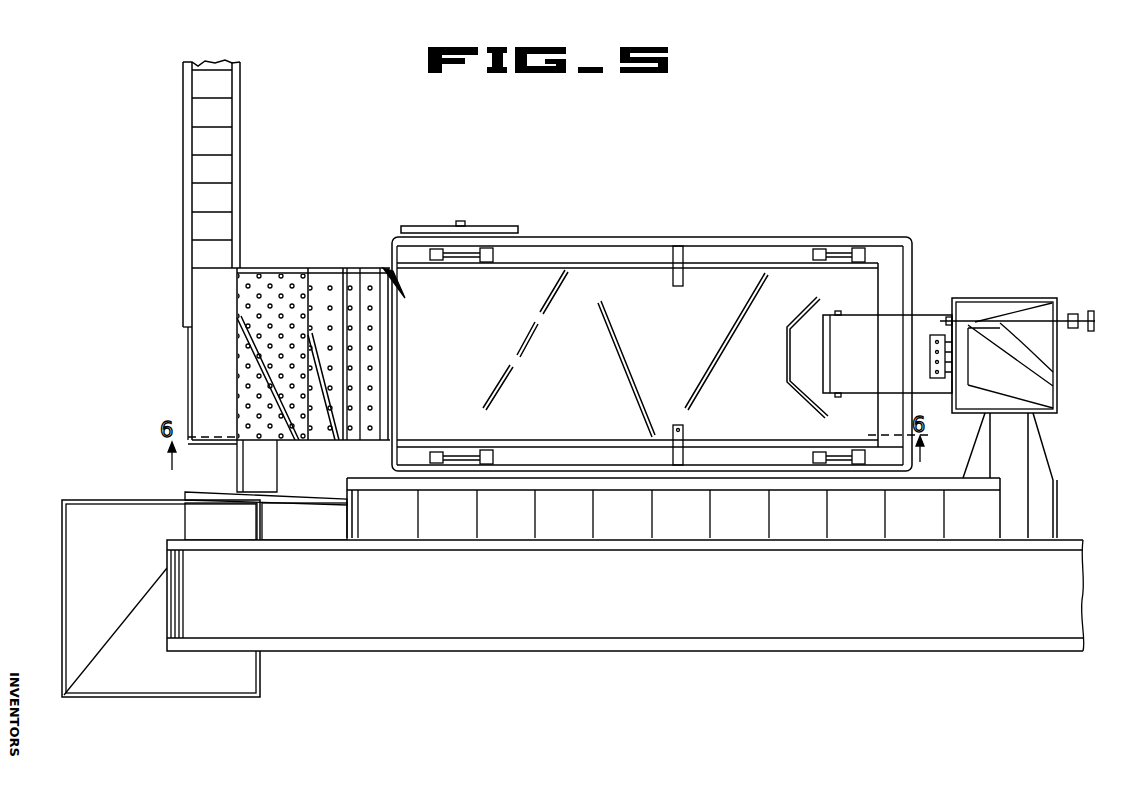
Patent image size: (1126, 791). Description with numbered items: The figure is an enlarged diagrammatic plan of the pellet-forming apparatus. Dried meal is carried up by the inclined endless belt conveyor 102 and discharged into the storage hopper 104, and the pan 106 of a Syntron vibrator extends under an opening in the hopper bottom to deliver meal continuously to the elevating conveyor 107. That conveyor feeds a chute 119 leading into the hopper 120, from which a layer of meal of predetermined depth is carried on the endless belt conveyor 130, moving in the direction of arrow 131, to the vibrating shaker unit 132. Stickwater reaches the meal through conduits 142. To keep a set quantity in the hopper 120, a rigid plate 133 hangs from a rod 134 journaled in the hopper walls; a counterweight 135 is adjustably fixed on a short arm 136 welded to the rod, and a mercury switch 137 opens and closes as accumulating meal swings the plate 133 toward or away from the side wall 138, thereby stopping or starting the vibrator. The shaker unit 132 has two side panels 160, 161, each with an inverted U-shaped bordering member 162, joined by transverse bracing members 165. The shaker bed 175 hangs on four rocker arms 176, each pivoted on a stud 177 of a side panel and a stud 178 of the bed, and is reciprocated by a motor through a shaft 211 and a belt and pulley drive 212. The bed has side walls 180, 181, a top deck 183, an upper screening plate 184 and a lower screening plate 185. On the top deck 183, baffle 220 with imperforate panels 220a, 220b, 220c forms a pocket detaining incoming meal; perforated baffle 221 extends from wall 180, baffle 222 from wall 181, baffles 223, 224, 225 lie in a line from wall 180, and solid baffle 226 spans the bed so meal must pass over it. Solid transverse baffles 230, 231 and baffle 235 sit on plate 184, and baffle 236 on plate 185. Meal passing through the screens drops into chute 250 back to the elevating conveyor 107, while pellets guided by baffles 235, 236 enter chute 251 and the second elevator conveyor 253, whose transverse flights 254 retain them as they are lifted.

The upwardly inclined endless belt conveyor 102 is at (664, 603).
The storage hopper 104 is at (153, 667).
The pan 106 is at (310, 518).
The elevating conveyor 107 is at (634, 522).
The chute 119 is at (1000, 428).
The hopper 120 is at (1015, 300).
The endless belt conveyor 130 is at (918, 326).
The arrow 131 is at (850, 377).
The vibrating shaker unit 132 is at (612, 233).
The rigid plate 133 is at (1052, 377).
The rod 134 is at (1005, 325).
The counterweight 135 is at (1070, 316).
The short arm 136 is at (1070, 314).
The mercury switch 137 is at (1092, 312).
The side wall 138 is at (980, 304).
The conduits 142 is at (940, 372).
The side panel 160 is at (741, 236).
The side panel 161 is at (689, 480).
The inverted U-shaped bordering member 162 is at (558, 244).
The transverse bracing members 165 is at (678, 250).
The shaker bed 175 is at (385, 268).
The rocker arms 176 is at (838, 249).
The stud 177 is at (488, 262).
The stud 178 is at (437, 260).
The side wall 180 is at (645, 268).
The side wall 181 is at (595, 440).
The top deck 183 is at (682, 342).
The upper screening plate 184 is at (332, 292).
The lower screening plate 185 is at (260, 290).
The shaft 211 is at (458, 224).
The belt and pulley drive 212 is at (478, 230).
The baffle 220 is at (775, 343).
The imperforate panel 220a is at (798, 397).
The imperforate panel 220b is at (825, 347).
The imperforate panel 220c is at (830, 326).
The baffle 221 is at (728, 327).
The baffle 222 is at (628, 362).
The baffle 223 is at (560, 292).
The baffle 224 is at (530, 346).
The baffle 225 is at (508, 386).
The baffle 226 is at (393, 340).
The solid transverse baffle 230 is at (362, 358).
The solid transverse baffle 231 is at (347, 381).
The baffle 235 is at (327, 407).
The baffle 236 is at (245, 340).
The chute 250 is at (255, 455).
The chute 251 is at (210, 357).
The second elevator conveyor 253 is at (220, 82).
The transverse flights 254 is at (220, 183).